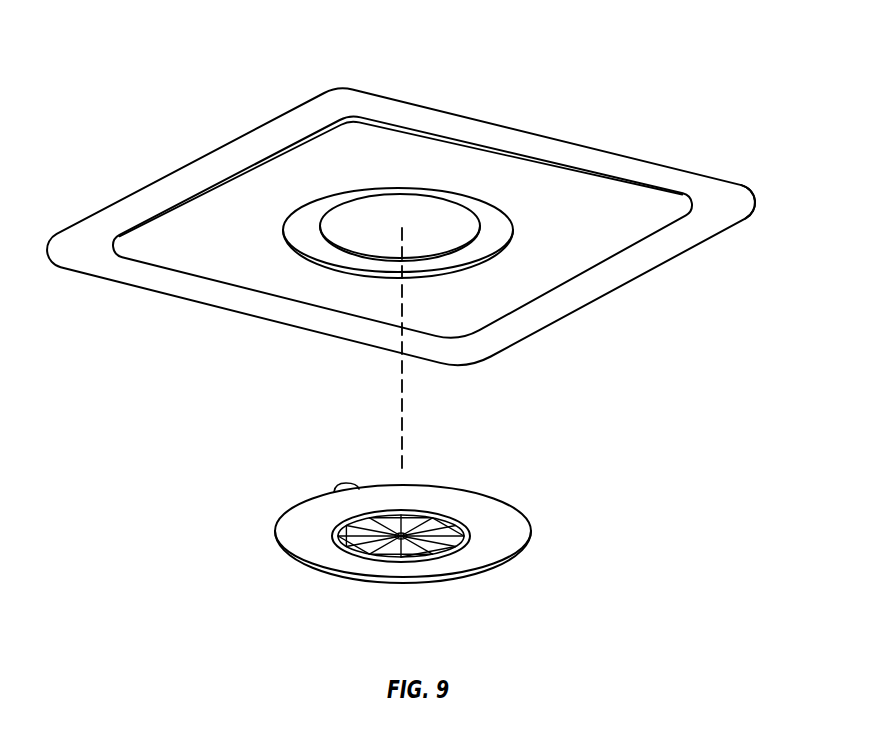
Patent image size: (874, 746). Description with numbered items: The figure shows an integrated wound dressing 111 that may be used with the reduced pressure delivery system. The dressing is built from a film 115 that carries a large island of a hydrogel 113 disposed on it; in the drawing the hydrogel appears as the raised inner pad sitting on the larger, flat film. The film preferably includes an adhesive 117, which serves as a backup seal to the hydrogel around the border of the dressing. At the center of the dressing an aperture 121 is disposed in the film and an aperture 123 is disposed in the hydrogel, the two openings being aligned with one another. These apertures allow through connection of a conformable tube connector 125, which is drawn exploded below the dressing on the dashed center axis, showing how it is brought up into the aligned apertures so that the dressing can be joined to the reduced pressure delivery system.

The integrated wound dressing 111 is at (626, 63).
The hydrogel 113 is at (273, 177).
The film 115 is at (132, 194).
The adhesive 117 is at (735, 202).
The aperture in the film 121 is at (480, 227).
The aperture in the hydrogel 123 is at (516, 243).
The conformable tube connector 125 is at (508, 506).